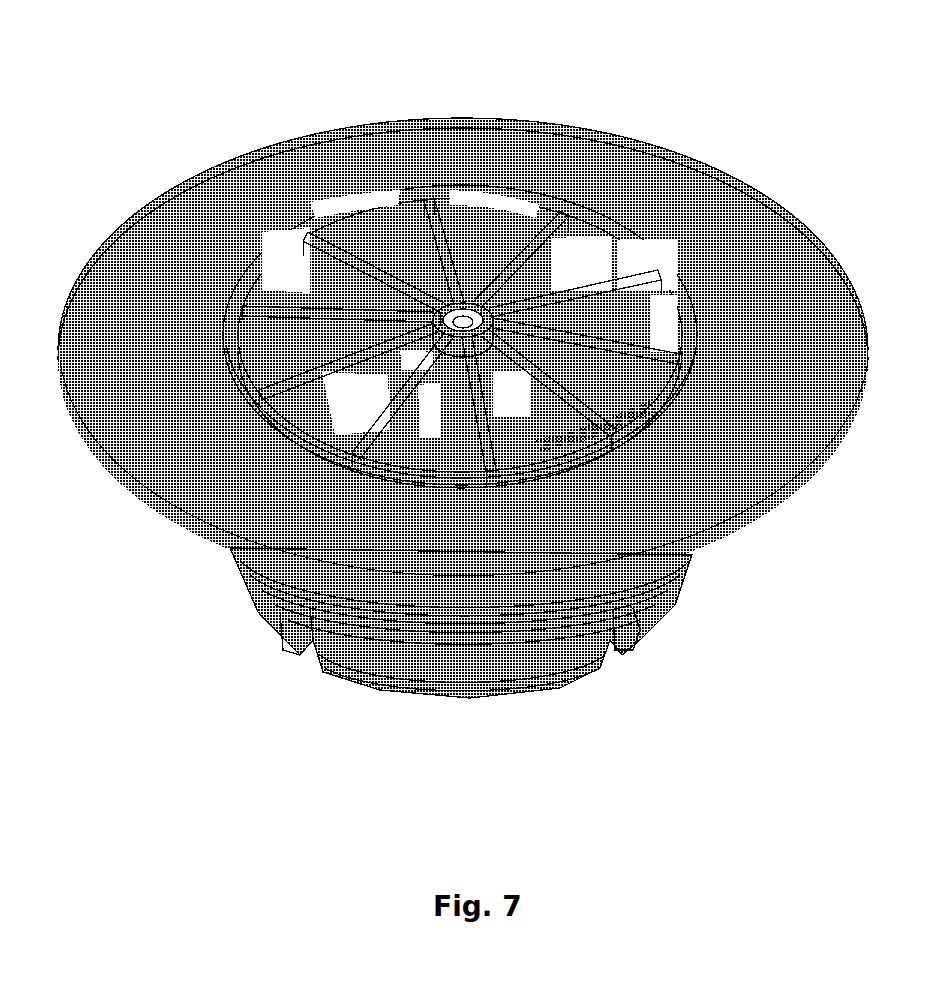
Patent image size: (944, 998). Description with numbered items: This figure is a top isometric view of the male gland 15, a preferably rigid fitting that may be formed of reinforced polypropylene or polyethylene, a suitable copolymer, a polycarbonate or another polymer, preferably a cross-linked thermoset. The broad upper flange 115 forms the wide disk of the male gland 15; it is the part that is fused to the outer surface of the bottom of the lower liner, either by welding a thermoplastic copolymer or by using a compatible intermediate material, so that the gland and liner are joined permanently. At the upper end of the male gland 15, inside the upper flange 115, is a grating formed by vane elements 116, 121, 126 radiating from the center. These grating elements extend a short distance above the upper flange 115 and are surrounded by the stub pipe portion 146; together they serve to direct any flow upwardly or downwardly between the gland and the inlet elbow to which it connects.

The male gland 15 is at (680, 608).
The upper flange 115 is at (728, 215).
The vane element 116 is at (515, 247).
The vane element 121 is at (345, 258).
The vane element 126 is at (460, 318).
The stub pipe portion 146 is at (645, 418).